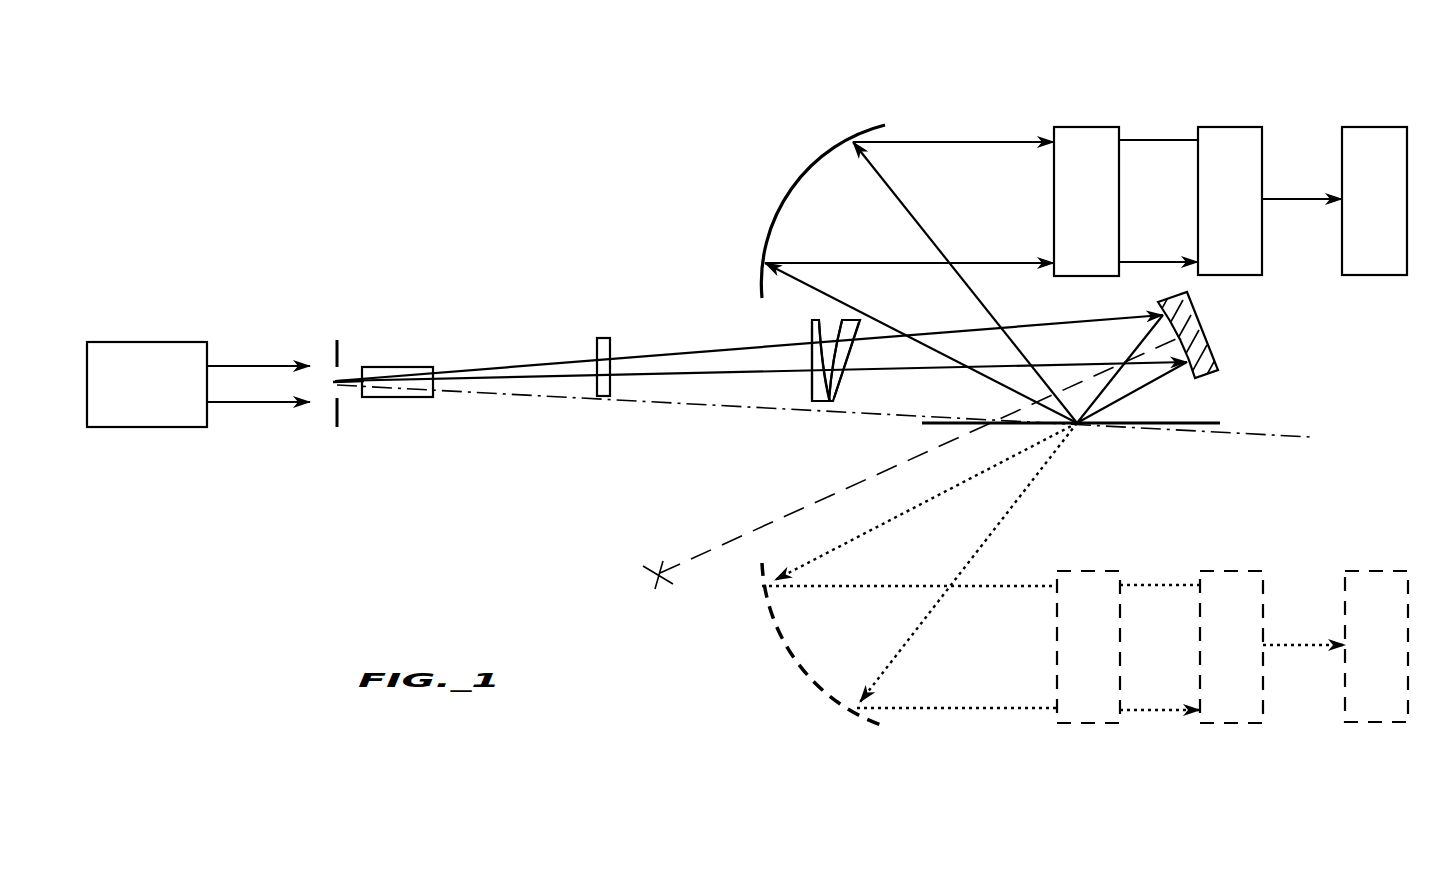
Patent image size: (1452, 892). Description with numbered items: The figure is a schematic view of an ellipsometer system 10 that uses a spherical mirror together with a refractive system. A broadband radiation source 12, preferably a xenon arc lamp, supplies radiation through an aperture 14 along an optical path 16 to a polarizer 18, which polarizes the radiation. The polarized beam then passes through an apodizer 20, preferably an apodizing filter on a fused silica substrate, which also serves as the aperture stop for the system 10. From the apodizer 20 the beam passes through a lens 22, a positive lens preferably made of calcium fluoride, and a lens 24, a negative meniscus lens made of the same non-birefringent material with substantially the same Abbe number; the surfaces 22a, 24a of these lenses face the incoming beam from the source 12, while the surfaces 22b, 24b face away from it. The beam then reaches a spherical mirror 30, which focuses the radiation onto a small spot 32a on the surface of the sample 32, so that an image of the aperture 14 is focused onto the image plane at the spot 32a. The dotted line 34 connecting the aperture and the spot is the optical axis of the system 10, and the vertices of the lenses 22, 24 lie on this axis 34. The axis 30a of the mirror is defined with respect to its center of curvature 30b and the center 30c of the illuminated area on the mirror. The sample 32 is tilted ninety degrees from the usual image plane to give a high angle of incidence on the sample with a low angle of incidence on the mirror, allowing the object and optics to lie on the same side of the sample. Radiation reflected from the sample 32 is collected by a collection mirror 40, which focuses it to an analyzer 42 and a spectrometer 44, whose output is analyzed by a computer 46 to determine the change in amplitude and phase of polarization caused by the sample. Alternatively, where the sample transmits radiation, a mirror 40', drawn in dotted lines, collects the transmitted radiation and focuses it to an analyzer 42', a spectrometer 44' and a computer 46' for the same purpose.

The system 10 is at (362, 139).
The broadband radiation source 12 is at (143, 342).
The aperture 14 is at (340, 345).
The optical path 16 is at (346, 384).
The polarizer 18 is at (410, 367).
The apodizer 20 is at (605, 338).
The lens 22 is at (770, 369).
The surface of lens 22a is at (812, 360).
The surface of lens 22b is at (818, 328).
The negative meniscus lens 24 is at (877, 357).
The surface of lens 24a is at (843, 320).
The surface of lens 24b is at (850, 355).
The spherical mirror 30 is at (1149, 352).
The axis of the mirror 30a is at (793, 512).
The center of curvature 30b is at (655, 583).
The center of the illuminated area 30c is at (1180, 337).
The sample 32 is at (1195, 423).
The spot 32a is at (1078, 425).
The optical axis 34 is at (553, 398).
The collection mirror 40 is at (903, 211).
The mirror 40' is at (888, 645).
The analyzer 42 is at (1126, 183).
The analyzer 42' is at (1128, 628).
The spectrometer 44 is at (1270, 182).
The spectrometer 44' is at (1272, 628).
The computer 46 is at (1386, 182).
The computer 46' is at (1396, 628).